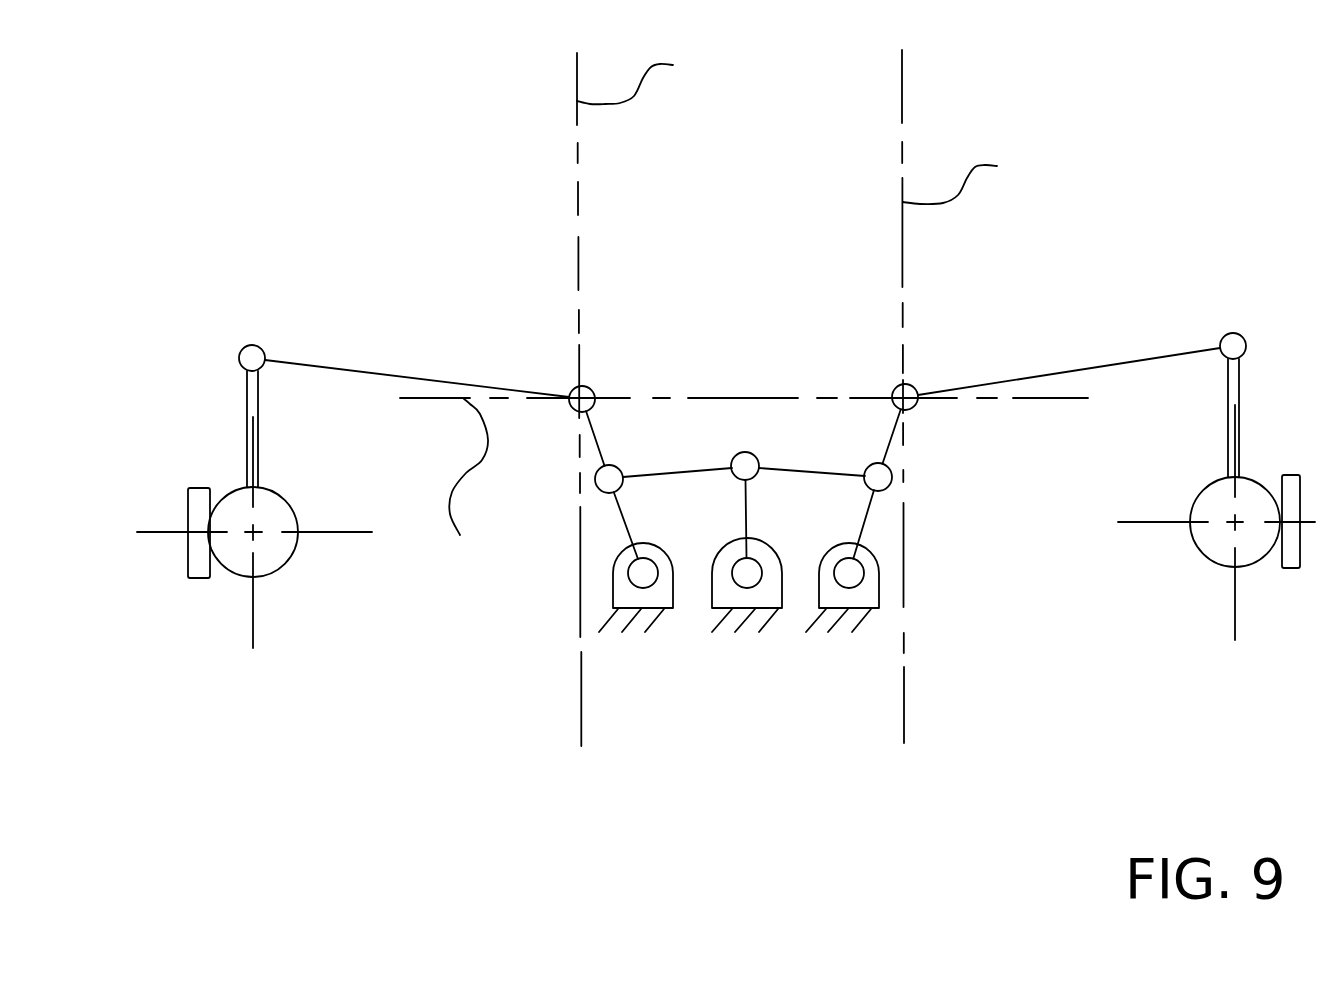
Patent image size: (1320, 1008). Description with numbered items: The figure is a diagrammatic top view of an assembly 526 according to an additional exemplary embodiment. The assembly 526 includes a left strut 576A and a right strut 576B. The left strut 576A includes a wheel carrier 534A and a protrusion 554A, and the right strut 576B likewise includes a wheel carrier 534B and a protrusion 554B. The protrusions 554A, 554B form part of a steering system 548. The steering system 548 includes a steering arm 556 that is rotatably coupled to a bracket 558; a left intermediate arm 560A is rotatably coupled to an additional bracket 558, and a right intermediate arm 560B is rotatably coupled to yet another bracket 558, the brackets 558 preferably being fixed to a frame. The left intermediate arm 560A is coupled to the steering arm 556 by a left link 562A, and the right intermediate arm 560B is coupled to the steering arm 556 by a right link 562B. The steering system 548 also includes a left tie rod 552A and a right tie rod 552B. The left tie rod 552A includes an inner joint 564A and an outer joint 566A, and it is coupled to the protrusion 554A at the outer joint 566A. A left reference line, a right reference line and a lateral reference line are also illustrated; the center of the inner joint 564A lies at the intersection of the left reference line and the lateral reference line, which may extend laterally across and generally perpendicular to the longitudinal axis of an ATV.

The steering system 548 is at (1114, 174).
The assembly 526 is at (947, 816).
The inner joint 564A is at (592, 390).
The outer joint 566A is at (260, 345).
The left tie rod 552A is at (417, 378).
The right tie rod 552B is at (1138, 361).
The protrusion 554A is at (258, 428).
The protrusion 554B is at (1225, 418).
The left strut 576A is at (290, 568).
The right strut 576B is at (1203, 560).
The wheel carrier 534A is at (190, 580).
The wheel carrier 534B is at (1278, 568).
The left intermediate arm 560A is at (625, 528).
The right intermediate arm 560B is at (895, 440).
The left link 562A is at (683, 471).
The right link 562B is at (813, 472).
The steering arm 556 is at (745, 518).
The bracket 558 is at (614, 610).